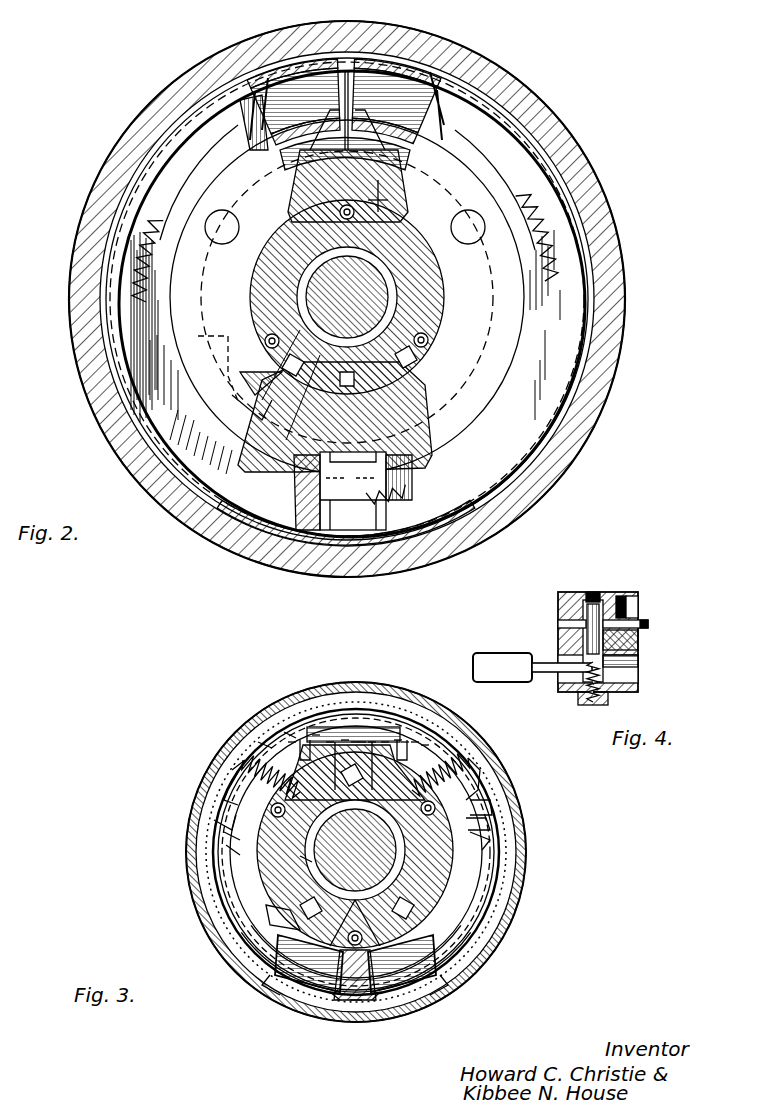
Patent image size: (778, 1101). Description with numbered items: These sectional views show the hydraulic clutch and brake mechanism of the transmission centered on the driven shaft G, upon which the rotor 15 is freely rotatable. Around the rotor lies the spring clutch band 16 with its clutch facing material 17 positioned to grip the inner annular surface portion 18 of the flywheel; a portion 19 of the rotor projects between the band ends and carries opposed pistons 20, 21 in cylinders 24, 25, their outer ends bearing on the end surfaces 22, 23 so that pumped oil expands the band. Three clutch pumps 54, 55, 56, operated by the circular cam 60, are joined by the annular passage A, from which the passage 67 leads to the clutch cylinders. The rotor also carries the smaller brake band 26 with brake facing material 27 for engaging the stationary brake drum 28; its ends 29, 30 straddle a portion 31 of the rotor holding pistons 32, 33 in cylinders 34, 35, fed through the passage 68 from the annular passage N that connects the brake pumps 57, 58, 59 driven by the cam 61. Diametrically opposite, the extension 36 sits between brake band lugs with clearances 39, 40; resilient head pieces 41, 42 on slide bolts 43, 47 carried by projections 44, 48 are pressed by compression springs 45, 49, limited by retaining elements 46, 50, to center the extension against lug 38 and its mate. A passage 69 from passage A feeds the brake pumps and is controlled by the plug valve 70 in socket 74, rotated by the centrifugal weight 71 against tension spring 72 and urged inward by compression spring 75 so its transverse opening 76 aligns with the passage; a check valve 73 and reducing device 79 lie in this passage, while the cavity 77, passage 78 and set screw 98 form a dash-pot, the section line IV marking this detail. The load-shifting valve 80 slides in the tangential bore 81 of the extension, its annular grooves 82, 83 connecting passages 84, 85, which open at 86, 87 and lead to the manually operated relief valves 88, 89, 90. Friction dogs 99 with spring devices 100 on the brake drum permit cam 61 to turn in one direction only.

In FIG. 2, the rotor 15 is at (540, 410).
In FIG. 4, the rotor 15 is at (640, 640).
In FIG. 3, the rotor 15 is at (206, 892).
In FIG. 2, the clutch band 16 is at (590, 225).
In FIG. 2, the clutch facing material 17 is at (582, 203).
In FIG. 2, the inner annular surface portion 18 is at (613, 262).
In FIG. 2, the rotor portion 19 is at (470, 70).
In FIG. 2, the piston 20 is at (302, 200).
In FIG. 2, the piston 21 is at (468, 82).
In FIG. 2, the end surface 22 is at (263, 133).
In FIG. 2, the end surface 23 is at (470, 96).
In FIG. 2, the cylinder 24 is at (420, 50).
In FIG. 2, the cylinder 25 is at (450, 62).
In FIG. 3, the brake band 26 is at (506, 890).
In FIG. 3, the brake facing material 27 is at (510, 875).
In FIG. 3, the brake drum 28 is at (492, 920).
In FIG. 3, the brake band end 29 is at (266, 975).
In FIG. 3, the brake band end 30 is at (455, 955).
In FIG. 3, the rotor portion 31 is at (390, 1000).
In FIG. 3, the piston 32 is at (306, 995).
In FIG. 3, the piston 33 is at (420, 985).
In FIG. 3, the cylinder 34 is at (336, 1000).
In FIG. 3, the cylinder 35 is at (358, 1002).
In FIG. 3, the extension 36 is at (372, 742).
In FIG. 3, the lug 38 is at (415, 742).
In FIG. 3, the clearance 39 is at (315, 735).
In FIG. 3, the clearance 40 is at (425, 745).
In FIG. 3, the resilient head piece 41 is at (290, 735).
In FIG. 3, the resilient head piece 42 is at (448, 730).
In FIG. 3, the slide bolt 43 is at (216, 825).
In FIG. 3, the projection 44 is at (226, 836).
In FIG. 3, the compression spring 45 is at (262, 760).
In FIG. 3, the retaining element 46 is at (226, 795).
In FIG. 3, the slide bolt 47 is at (470, 760).
In FIG. 3, the projection 48 is at (496, 835).
In FIG. 3, the compression spring 49 is at (462, 745).
In FIG. 3, the retaining element 50 is at (482, 772).
In FIG. 2, the pump device 54 is at (300, 284).
In FIG. 3, the pump device 54 is at (413, 848).
In FIG. 2, the pump device 55 is at (400, 405).
In FIG. 3, the pump device 55 is at (366, 766).
In FIG. 2, the pump device 56 is at (422, 262).
In FIG. 3, the pump device 56 is at (290, 830).
In FIG. 2, the pump device 57 is at (268, 350).
In FIG. 3, the pump device 57 is at (420, 882).
In FIG. 2, the pump device 58 is at (397, 176).
In FIG. 2, the pump device 59 is at (440, 350).
In FIG. 3, the pump device 59 is at (310, 886).
In FIG. 2, the circular cam 60 is at (470, 314).
In FIG. 3, the circular cam 61 is at (520, 905).
In FIG. 2, the passage 67 is at (300, 207).
In FIG. 3, the passage 68 is at (276, 915).
In FIG. 2, the passage 69 is at (232, 395).
In FIG. 3, the passage 69 is at (424, 896).
In FIG. 2, the valve 70 is at (250, 528).
In FIG. 4, the valve 70 is at (625, 657).
In FIG. 2, the weight 71 is at (242, 372).
In FIG. 4, the weight 71 is at (506, 657).
In FIG. 2, the tension spring 72 is at (132, 454).
In FIG. 2, the check valve 73 is at (270, 540).
In FIG. 4, the check valve 73 is at (640, 650).
In FIG. 2, the cylindrical socket 74 is at (205, 520).
In FIG. 4, the compression spring 75 is at (610, 698).
In FIG. 4, the transverse opening 76 is at (600, 606).
In FIG. 4, the cavity 77 is at (588, 604).
In FIG. 4, the passage 78 is at (640, 612).
In FIG. 4, the reducing device 79 is at (562, 626).
In FIG. 3, the load-shifting valve 80 is at (362, 742).
In FIG. 3, the tangential bore 81 is at (385, 742).
In FIG. 3, the annular groove 82 is at (330, 742).
In FIG. 3, the annular groove 83 is at (405, 742).
In FIG. 2, the passage 84 is at (362, 213).
In FIG. 3, the passage 84 is at (345, 740).
In FIG. 3, the passage 85 is at (398, 740).
In FIG. 3, the opening 86 is at (355, 742).
In FIG. 3, the opening 87 is at (292, 745).
In FIG. 2, the relief valve 88 is at (265, 325).
In FIG. 3, the relief valve 88 is at (420, 864).
In FIG. 2, the relief valve 89 is at (383, 203).
In FIG. 3, the relief valve 89 is at (265, 745).
In FIG. 2, the relief valve 90 is at (408, 366).
In FIG. 3, the relief valve 90 is at (300, 870).
In FIG. 4, the set screw 98 is at (638, 602).
In FIG. 3, the friction dog 99 is at (482, 782).
In FIG. 3, the spring device 100 is at (472, 806).
In FIG. 2, the annular passage A is at (228, 290).
In FIG. 2, the driven shaft G is at (305, 298).
In FIG. 3, the driven shaft G is at (305, 860).
In FIG. 3, the annular passage N is at (232, 850).
In FIG. 2, the section line IV— IV is at (232, 456).